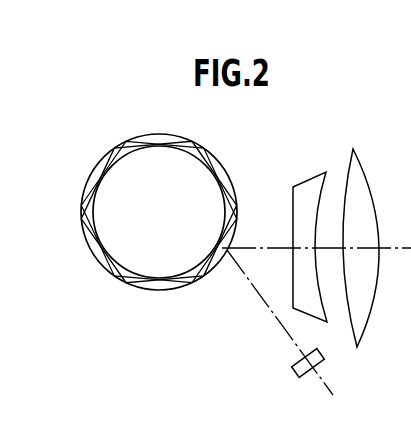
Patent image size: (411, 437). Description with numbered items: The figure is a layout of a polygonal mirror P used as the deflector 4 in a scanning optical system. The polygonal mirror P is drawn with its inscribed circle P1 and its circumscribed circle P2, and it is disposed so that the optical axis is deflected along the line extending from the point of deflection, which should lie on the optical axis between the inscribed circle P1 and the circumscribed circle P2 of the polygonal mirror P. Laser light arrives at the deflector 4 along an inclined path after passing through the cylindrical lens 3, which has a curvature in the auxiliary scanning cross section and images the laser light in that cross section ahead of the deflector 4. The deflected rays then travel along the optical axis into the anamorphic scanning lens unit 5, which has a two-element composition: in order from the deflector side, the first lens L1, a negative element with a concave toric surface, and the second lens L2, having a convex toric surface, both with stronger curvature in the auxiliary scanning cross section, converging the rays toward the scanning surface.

The polygonal mirror P is at (156, 237).
The inscribed circle P1 is at (123, 282).
The circumscribed circle P2 is at (97, 262).
The deflector 4 is at (163, 298).
The scanning lens unit 5 is at (372, 134).
The first lens L1 is at (310, 185).
The second lens L2 is at (360, 177).
The cylindrical lens 3 is at (292, 370).